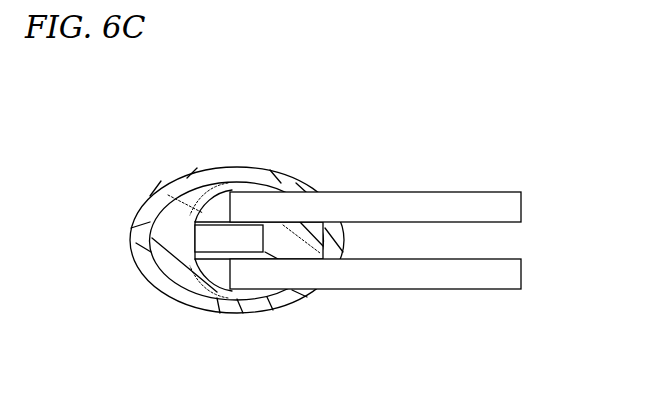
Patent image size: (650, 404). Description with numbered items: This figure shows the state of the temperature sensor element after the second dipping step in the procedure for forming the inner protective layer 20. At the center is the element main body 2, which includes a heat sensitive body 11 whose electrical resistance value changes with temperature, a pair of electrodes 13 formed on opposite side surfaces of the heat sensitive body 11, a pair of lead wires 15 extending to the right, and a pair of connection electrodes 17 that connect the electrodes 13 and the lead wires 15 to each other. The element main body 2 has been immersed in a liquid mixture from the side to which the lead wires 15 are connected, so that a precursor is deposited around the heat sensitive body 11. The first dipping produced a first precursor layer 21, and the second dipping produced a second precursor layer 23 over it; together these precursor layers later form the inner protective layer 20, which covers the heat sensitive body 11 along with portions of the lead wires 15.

The element main body 2 is at (380, 240).
The heat sensitive body 11 is at (194, 240).
The electrode 13 is at (210, 182).
The lead wire 15 is at (504, 190).
The connection electrode 17 is at (238, 168).
The inner protective layer 20 is at (278, 99).
The first precursor layer 21 is at (280, 188).
The second precursor layer 23 is at (305, 185).